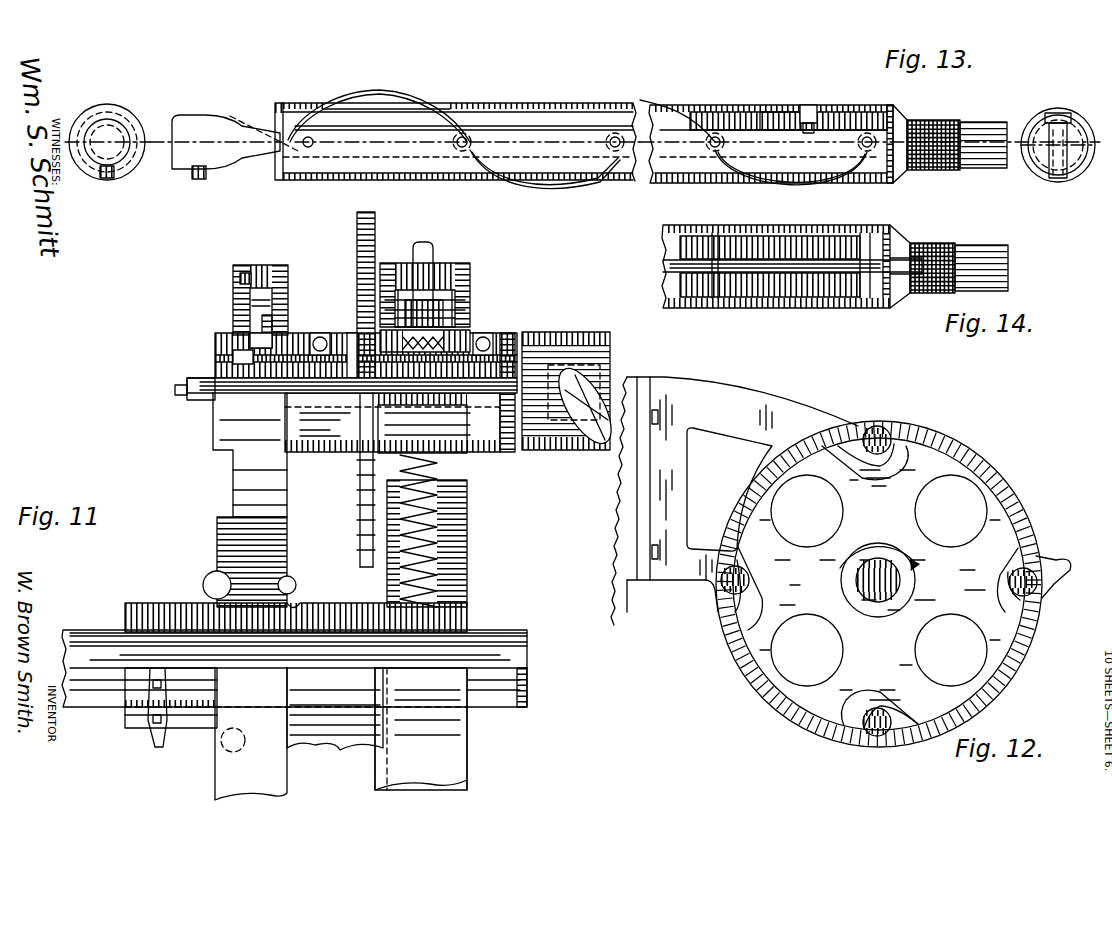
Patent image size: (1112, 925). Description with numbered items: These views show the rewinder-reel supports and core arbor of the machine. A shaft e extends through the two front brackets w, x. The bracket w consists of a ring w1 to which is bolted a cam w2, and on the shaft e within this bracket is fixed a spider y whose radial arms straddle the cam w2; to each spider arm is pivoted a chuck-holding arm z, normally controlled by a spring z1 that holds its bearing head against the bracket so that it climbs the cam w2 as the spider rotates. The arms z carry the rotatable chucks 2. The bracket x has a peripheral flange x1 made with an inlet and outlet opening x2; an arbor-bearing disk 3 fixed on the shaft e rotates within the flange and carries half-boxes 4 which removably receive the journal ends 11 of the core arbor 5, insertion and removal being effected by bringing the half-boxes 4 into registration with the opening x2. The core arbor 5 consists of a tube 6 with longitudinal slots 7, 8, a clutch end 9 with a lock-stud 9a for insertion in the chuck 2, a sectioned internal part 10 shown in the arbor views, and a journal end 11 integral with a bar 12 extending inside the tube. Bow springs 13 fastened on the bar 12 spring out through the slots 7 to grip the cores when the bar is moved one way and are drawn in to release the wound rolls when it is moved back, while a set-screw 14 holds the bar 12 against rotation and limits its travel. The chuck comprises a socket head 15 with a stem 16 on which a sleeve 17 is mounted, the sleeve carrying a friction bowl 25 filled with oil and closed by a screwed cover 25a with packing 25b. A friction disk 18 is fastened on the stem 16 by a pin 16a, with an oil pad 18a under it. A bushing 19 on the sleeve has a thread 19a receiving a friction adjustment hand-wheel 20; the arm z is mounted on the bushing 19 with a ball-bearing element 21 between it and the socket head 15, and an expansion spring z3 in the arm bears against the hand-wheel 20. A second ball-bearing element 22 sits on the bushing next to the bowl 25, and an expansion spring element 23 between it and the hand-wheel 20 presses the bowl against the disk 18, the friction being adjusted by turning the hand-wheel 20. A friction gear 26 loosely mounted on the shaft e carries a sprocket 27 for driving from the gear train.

In FIG. 11, the rotatable chuck 2 is at (566, 375).
In FIG. 12, the arbor-bearing disk 3 is at (880, 585).
In FIG. 12, the half-boxes 4 is at (860, 430).
In FIG. 13, the core arbor 5 is at (728, 135).
In FIG. 14, the core arbor 5 is at (922, 266).
In FIG. 13, the tube 6 is at (140, 116).
In FIG. 14, the tube 6 is at (762, 308).
In FIG. 13, the longitudinal slots 7 is at (384, 108).
In FIG. 14, the longitudinal slots 7 is at (672, 268).
In FIG. 13, the longitudinal slots 8 is at (783, 110).
In FIG. 13, the clutch end 9 is at (118, 128).
In FIG. 13, the lock-stud 9a is at (198, 180).
In FIG. 13, the bushing 10 is at (728, 118).
In FIG. 14, the bushing 10 is at (797, 298).
In FIG. 13, the journal end 11 is at (975, 130).
In FIG. 14, the journal end 11 is at (990, 268).
In FIG. 12, the journal end 11 is at (880, 428).
In FIG. 13, the bar 12 is at (402, 128).
In FIG. 14, the bar 12 is at (832, 298).
In FIG. 13, the bow springs 13 is at (357, 96).
In FIG. 14, the bow springs 13 is at (876, 300).
In FIG. 13, the set-screw 14 is at (810, 105).
In FIG. 11, the socket head 15 is at (562, 400).
In FIG. 11, the stem 16 is at (318, 400).
In FIG. 11, the pin 16a is at (180, 390).
In FIG. 11, the sleeve 17 is at (303, 400).
In FIG. 11, the friction disk 18 is at (233, 360).
In FIG. 11, the oil pad 18a is at (250, 356).
In FIG. 11, the bushing 19 is at (336, 400).
In FIG. 11, the thread 19a is at (356, 400).
In FIG. 11, the friction adjustment hand-wheel 20 is at (357, 253).
In FIG. 11, the ball-bearing element 21 is at (503, 443).
In FIG. 11, the ball-bearing element 22 is at (328, 336).
In FIG. 11, the expansion spring element 23 is at (352, 336).
In FIG. 11, the friction bowl 25 is at (250, 278).
In FIG. 11, the cover 25a is at (265, 316).
In FIG. 11, the packing 25b is at (240, 283).
In FIG. 11, the friction gear 26 is at (220, 782).
In FIG. 11, the sprocket 27 is at (155, 742).
In FIG. 12, the frame a is at (664, 508).
In FIG. 12, the shaft e is at (876, 598).
In FIG. 11, the shaft e is at (85, 643).
In FIG. 11, the bracket w is at (470, 266).
In FIG. 11, the ring w1 is at (460, 322).
In FIG. 11, the cam w2 is at (441, 300).
In FIG. 12, the bracket x is at (746, 412).
In FIG. 12, the peripheral flange x1 is at (910, 425).
In FIG. 12, the inlet and outlet opening x2 is at (1046, 560).
In FIG. 11, the spider y is at (467, 528).
In FIG. 11, the chuck-holding arm z is at (470, 336).
In FIG. 11, the spring z1 is at (440, 562).
In FIG. 11, the expansion spring z3 is at (404, 300).